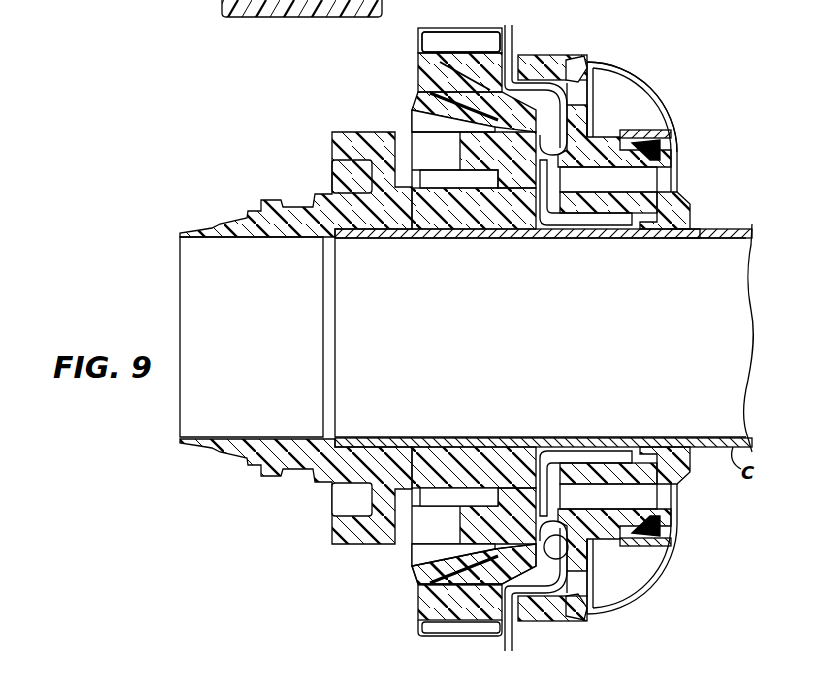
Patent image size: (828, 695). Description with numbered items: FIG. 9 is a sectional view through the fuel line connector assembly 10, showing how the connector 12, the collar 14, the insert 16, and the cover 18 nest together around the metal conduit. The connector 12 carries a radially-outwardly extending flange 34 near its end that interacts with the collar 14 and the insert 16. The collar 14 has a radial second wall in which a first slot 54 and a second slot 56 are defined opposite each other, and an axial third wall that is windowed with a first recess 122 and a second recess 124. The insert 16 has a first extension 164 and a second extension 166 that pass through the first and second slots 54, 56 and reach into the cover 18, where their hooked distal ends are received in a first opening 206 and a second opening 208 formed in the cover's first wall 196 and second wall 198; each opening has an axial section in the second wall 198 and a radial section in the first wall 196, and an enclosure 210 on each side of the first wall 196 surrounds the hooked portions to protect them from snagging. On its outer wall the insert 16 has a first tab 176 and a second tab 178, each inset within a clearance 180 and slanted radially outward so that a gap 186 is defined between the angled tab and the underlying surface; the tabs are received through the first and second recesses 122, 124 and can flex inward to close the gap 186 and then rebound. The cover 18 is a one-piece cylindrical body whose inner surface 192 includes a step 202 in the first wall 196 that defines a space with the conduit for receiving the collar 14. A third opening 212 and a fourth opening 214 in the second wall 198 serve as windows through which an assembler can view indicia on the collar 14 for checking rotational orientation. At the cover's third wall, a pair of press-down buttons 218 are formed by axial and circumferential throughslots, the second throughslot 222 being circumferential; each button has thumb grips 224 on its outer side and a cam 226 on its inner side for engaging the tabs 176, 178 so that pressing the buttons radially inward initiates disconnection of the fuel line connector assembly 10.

The fuel line connector assembly 10 is at (655, 32).
The connector 12 is at (316, 568).
The collar 14 is at (611, 589).
The insert 16 is at (413, 545).
The cover 18 is at (276, 24).
The flange 34 is at (497, 173).
The first slot 54 is at (610, 140).
The second slot 56 is at (585, 520).
The first recess 122 is at (509, 88).
The second recess 124 is at (511, 580).
The first extension 164 is at (623, 167).
The second extension 166 is at (612, 496).
The first tab 176 is at (428, 98).
The second tab 178 is at (448, 575).
The clearance 180 is at (474, 338).
The gap 186 is at (447, 118).
The inner surface 192 is at (684, 234).
The first wall 196 is at (600, 185).
The second wall 198 is at (556, 134).
The step 202 is at (660, 210).
The first opening 206 is at (646, 162).
The second opening 208 is at (648, 519).
The enclosure 210 is at (620, 132).
The third opening 212 is at (578, 68).
The fourth opening 214 is at (590, 600).
The press-down buttons 218 is at (418, 44).
The second throughslot 222 is at (523, 58).
The thumb grips 224 is at (447, 28).
The cam 226 is at (463, 85).